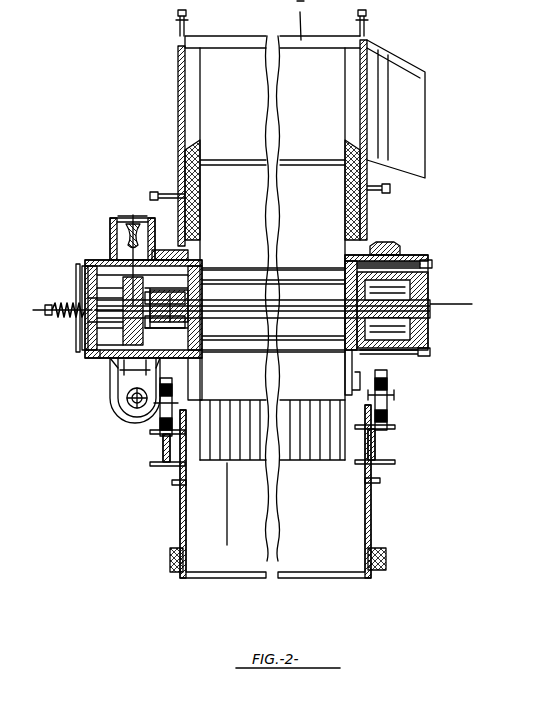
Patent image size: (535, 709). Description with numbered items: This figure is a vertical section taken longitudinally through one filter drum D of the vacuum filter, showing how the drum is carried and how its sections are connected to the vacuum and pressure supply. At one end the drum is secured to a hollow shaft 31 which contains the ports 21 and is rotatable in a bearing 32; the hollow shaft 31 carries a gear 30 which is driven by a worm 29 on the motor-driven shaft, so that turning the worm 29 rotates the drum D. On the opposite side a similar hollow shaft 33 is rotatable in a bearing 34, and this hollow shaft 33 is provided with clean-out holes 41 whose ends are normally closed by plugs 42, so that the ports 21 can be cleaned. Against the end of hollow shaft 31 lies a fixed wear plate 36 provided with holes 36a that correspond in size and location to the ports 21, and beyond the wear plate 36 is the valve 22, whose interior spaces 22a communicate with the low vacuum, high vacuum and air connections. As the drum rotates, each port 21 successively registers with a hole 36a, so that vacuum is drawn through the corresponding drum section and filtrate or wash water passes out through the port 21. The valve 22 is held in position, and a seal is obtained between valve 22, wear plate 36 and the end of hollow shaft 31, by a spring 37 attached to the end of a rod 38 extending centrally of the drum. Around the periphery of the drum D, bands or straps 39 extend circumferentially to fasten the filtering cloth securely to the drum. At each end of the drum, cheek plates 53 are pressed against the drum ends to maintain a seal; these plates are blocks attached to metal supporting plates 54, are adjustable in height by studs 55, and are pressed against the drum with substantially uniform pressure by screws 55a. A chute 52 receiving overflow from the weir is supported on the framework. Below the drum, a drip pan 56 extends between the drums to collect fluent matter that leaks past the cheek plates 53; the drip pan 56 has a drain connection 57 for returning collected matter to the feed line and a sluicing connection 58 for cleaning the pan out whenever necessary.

The port 21 is at (205, 270).
The valve 22 is at (102, 262).
The spaces 22a is at (92, 343).
The worm 29 is at (136, 410).
The gear 30 is at (118, 390).
The hollow shaft 31 is at (126, 262).
The bearing 32 is at (150, 228).
The hollow shaft 33 is at (410, 256).
The bearing 34 is at (388, 252).
The wear plate 36 is at (90, 323).
The holes 36a is at (100, 352).
The spring 37 is at (76, 300).
The rod 38 is at (432, 306).
The bands or straps 39 is at (255, 440).
The clean-out holes 41 is at (428, 272).
The plugs 42 is at (434, 264).
The chute 52 is at (405, 168).
The cheek plates 53 is at (185, 150).
The supporting plates 54 is at (178, 105).
The studs 55 is at (188, 32).
The screws 55a is at (152, 192).
The drip pan 56 is at (372, 515).
The drain connection 57 is at (170, 560).
The sluicing connection 58 is at (386, 556).
The drum D is at (272, 306).